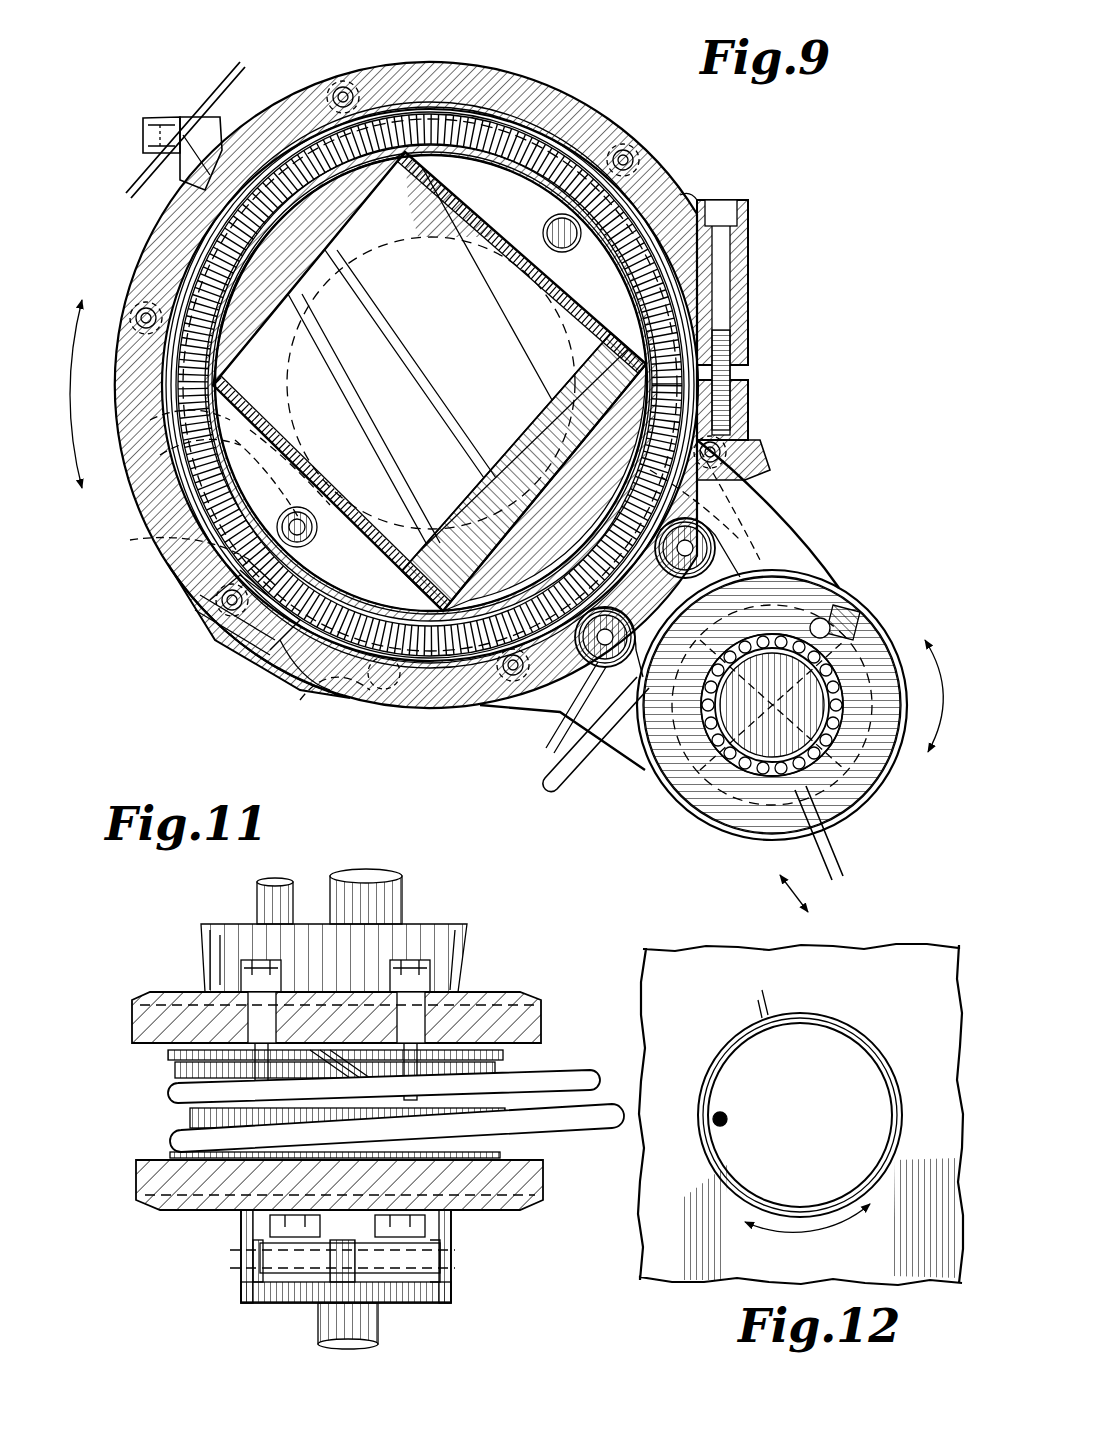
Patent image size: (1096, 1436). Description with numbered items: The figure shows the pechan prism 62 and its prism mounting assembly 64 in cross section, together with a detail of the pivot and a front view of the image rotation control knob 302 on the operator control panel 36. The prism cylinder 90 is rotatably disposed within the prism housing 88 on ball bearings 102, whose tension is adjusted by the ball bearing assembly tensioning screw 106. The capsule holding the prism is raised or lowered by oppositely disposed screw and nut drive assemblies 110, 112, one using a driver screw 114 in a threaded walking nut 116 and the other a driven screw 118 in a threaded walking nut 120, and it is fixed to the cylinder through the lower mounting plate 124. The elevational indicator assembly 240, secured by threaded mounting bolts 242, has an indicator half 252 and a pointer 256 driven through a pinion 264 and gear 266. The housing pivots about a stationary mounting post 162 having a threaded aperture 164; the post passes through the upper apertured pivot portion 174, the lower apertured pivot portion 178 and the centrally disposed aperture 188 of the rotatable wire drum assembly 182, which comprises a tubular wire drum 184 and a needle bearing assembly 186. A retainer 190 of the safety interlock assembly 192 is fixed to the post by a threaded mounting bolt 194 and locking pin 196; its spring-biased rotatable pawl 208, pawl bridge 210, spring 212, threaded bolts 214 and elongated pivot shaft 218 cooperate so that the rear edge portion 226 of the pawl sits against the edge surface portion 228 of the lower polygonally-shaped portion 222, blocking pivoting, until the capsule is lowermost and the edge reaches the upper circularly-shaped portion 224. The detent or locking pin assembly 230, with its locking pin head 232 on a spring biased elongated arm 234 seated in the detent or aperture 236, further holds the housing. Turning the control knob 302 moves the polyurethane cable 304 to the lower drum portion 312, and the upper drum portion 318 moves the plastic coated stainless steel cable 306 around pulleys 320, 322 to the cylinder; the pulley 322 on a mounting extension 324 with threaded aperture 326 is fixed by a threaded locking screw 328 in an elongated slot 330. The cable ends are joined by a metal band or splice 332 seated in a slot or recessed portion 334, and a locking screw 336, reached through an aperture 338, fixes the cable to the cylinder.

In FIG. 12, the operator control panel 36 is at (672, 1282).
In FIG. 9, the pechan prism 62 is at (472, 364).
In FIG. 9, the prism mounting assembly 64 is at (612, 830).
In FIG. 11, the prism mounting assembly 64 is at (217, 905).
In FIG. 9, the prism housing 88 is at (545, 108).
In FIG. 9, the prism cylinder 90 is at (498, 118).
In FIG. 9, the ball bearings 102 is at (348, 70).
In FIG. 9, the ball bearing assembly tensioning screw 106 is at (722, 270).
In FIG. 9, the screw and nut drive assembly 110 is at (312, 540).
In FIG. 9, the screw and nut drive assembly 112 is at (580, 245).
In FIG. 9, the driver screw 114 is at (320, 515).
In FIG. 9, the threaded walking nut 116 is at (160, 398).
In FIG. 9, the driven screw 118 is at (545, 224).
In FIG. 9, the threaded walking nut 120 is at (585, 132).
In FIG. 9, the lower mounting plate 124 is at (563, 108).
In FIG. 9, the stationary mounting post 162 is at (700, 800).
In FIG. 11, the threaded aperture 164 is at (365, 876).
In FIG. 11, the upper apertured pivot portion 174 is at (208, 965).
In FIG. 11, the lower apertured pivot portion 178 is at (190, 1212).
In FIG. 9, the rotatable wire drum assembly 182 is at (920, 550).
In FIG. 11, the rotatable wire drum assembly 182 is at (118, 1032).
In FIG. 9, the tubular wire drum 184 is at (915, 683).
In FIG. 11, the tubular wire drum 184 is at (175, 1135).
In FIG. 9, the needle bearing assembly 186 is at (765, 835).
In FIG. 9, the centrally disposed aperture 188 is at (805, 600).
In FIG. 9, the retainer 190 is at (858, 770).
In FIG. 11, the retainer 190 is at (248, 1292).
In FIG. 11, the safety interlock assembly 192 is at (162, 1302).
In FIG. 9, the threaded mounting bolt 194 is at (722, 822).
In FIG. 11, the threaded mounting bolt 194 is at (328, 1340).
In FIG. 9, the locking pin 196 is at (660, 770).
In FIG. 9, the spring-biased rotatable pawl 208 is at (535, 436).
In FIG. 11, the spring-biased rotatable pawl 208 is at (408, 1284).
In FIG. 11, the pawl bridge 210 is at (470, 1185).
In FIG. 11, the spring 212 is at (320, 1280).
In FIG. 11, the threaded bolts 214 is at (268, 1224).
In FIG. 9, the elongated pivot shaft 218 is at (742, 482).
In FIG. 11, the elongated pivot shaft 218 is at (235, 1258).
In FIG. 9, the lower polygonally-shaped portion 222 is at (880, 745).
In FIG. 11, the lower polygonally-shaped portion 222 is at (452, 1285).
In FIG. 9, the upper circularly-shaped portion 224 is at (835, 795).
In FIG. 11, the upper circularly-shaped portion 224 is at (240, 1268).
In FIG. 9, the rear longitudinally extending edge portion 226 is at (645, 628).
In FIG. 11, the rear longitudinally extending edge portion 226 is at (455, 1258).
In FIG. 9, the edge surface portion 228 is at (718, 552).
In FIG. 11, the edge surface portion 228 is at (262, 1302).
In FIG. 9, the detent or locking pin assembly 230 is at (200, 60).
In FIG. 9, the locking pin head 232 is at (226, 140).
In FIG. 9, the spring biased elongated arm 234 is at (215, 108).
In FIG. 9, the detent or aperture 236 is at (168, 186).
In FIG. 9, the elevational indicator assembly 240 is at (128, 507).
In FIG. 9, the threaded mounting bolts 242 is at (150, 440).
In FIG. 9, the indicator half 252 is at (325, 700).
In FIG. 9, the indicator or pointer 256 is at (145, 542).
In FIG. 9, the pinion 264 is at (318, 476).
In FIG. 9, the gear 266 is at (290, 430).
In FIG. 12, the image rotation control knob 302 is at (850, 1030).
In FIG. 9, the polyurethane cable 304 is at (560, 778).
In FIG. 11, the polyurethane cable 304 is at (394, 1068).
In FIG. 9, the plastic coated stainless steel cable 306 is at (290, 670).
In FIG. 11, the plastic coated stainless steel cable 306 is at (185, 1072).
In FIG. 11, the lower drum portion 312 is at (190, 1125).
In FIG. 9, the upper drum portion 318 is at (825, 820).
In FIG. 11, the upper drum portion 318 is at (498, 1062).
In FIG. 9, the pulley 320 is at (756, 522).
In FIG. 11, the pulley 320 is at (240, 1035).
In FIG. 9, the pulley 322 is at (566, 730).
In FIG. 11, the pulley 322 is at (522, 1022).
In FIG. 11, the mounting extension 324 is at (455, 988).
In FIG. 11, the threaded aperture 326 is at (450, 960).
In FIG. 11, the threaded locking screw 328 is at (412, 935).
In FIG. 11, the elongated slot 330 is at (470, 1000).
In FIG. 9, the metal band or splice 332 is at (862, 618).
In FIG. 11, the metal band or splice 332 is at (172, 1062).
In FIG. 9, the slot or recessed portion 334 is at (840, 614).
In FIG. 9, the locking screw 336 is at (235, 630).
In FIG. 9, the aperture 338 is at (200, 605).